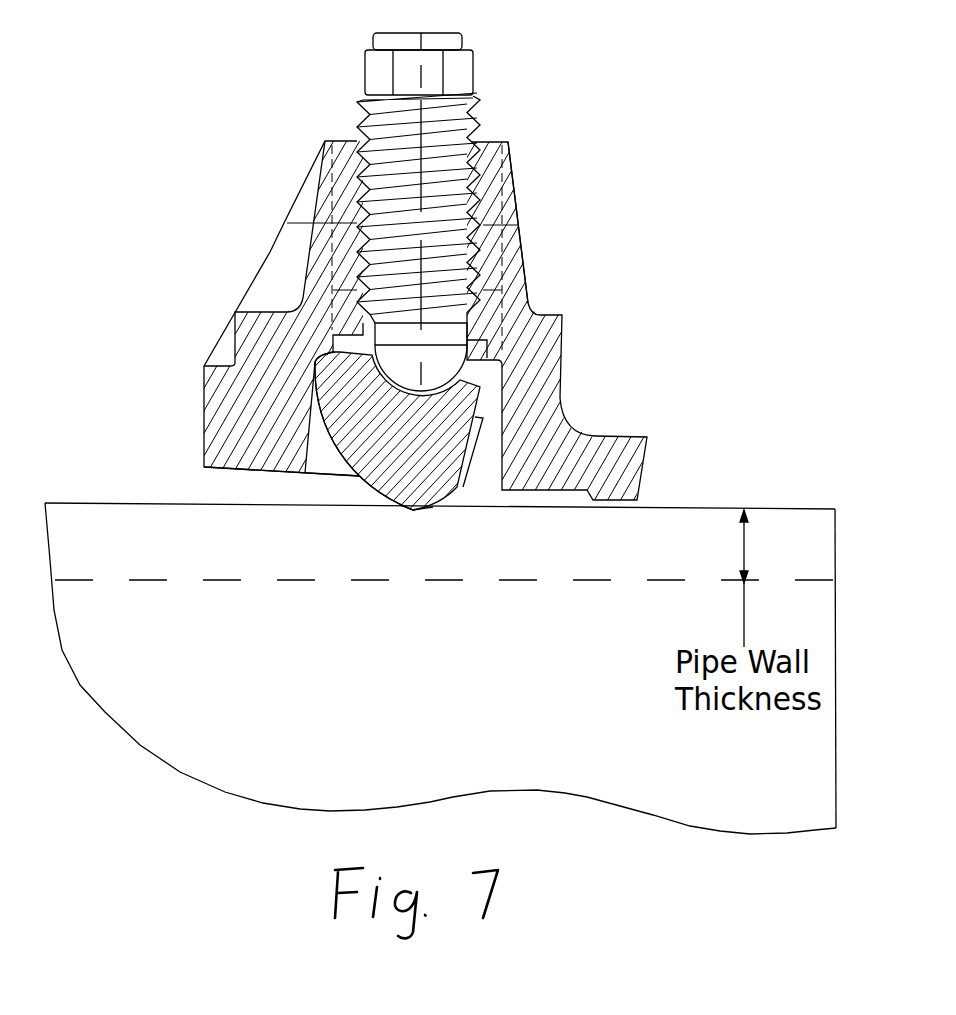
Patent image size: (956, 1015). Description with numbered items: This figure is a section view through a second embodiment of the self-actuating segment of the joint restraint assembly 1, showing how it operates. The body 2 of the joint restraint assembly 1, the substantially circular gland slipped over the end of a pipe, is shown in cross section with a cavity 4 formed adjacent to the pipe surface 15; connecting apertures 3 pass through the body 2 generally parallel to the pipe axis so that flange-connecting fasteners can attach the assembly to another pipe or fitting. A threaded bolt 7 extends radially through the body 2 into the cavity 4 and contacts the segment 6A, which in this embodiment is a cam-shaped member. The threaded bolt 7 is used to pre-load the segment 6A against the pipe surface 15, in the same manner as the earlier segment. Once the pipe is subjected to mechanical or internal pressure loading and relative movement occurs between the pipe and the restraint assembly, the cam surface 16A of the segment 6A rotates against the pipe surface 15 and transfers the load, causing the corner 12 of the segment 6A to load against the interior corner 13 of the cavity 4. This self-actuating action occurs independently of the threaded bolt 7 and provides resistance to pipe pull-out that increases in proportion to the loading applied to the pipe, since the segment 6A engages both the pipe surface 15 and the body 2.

The joint restraint assembly 1 is at (552, 300).
The body 2 is at (203, 422).
The connecting apertures 3 is at (528, 222).
The cavities 4 is at (312, 478).
The segment 6A is at (360, 482).
The threaded bolt 7 is at (483, 120).
The corner 12 is at (325, 368).
The interior corner 13 is at (311, 355).
The pipe surface 15 is at (660, 508).
The cam surface 16A is at (410, 513).